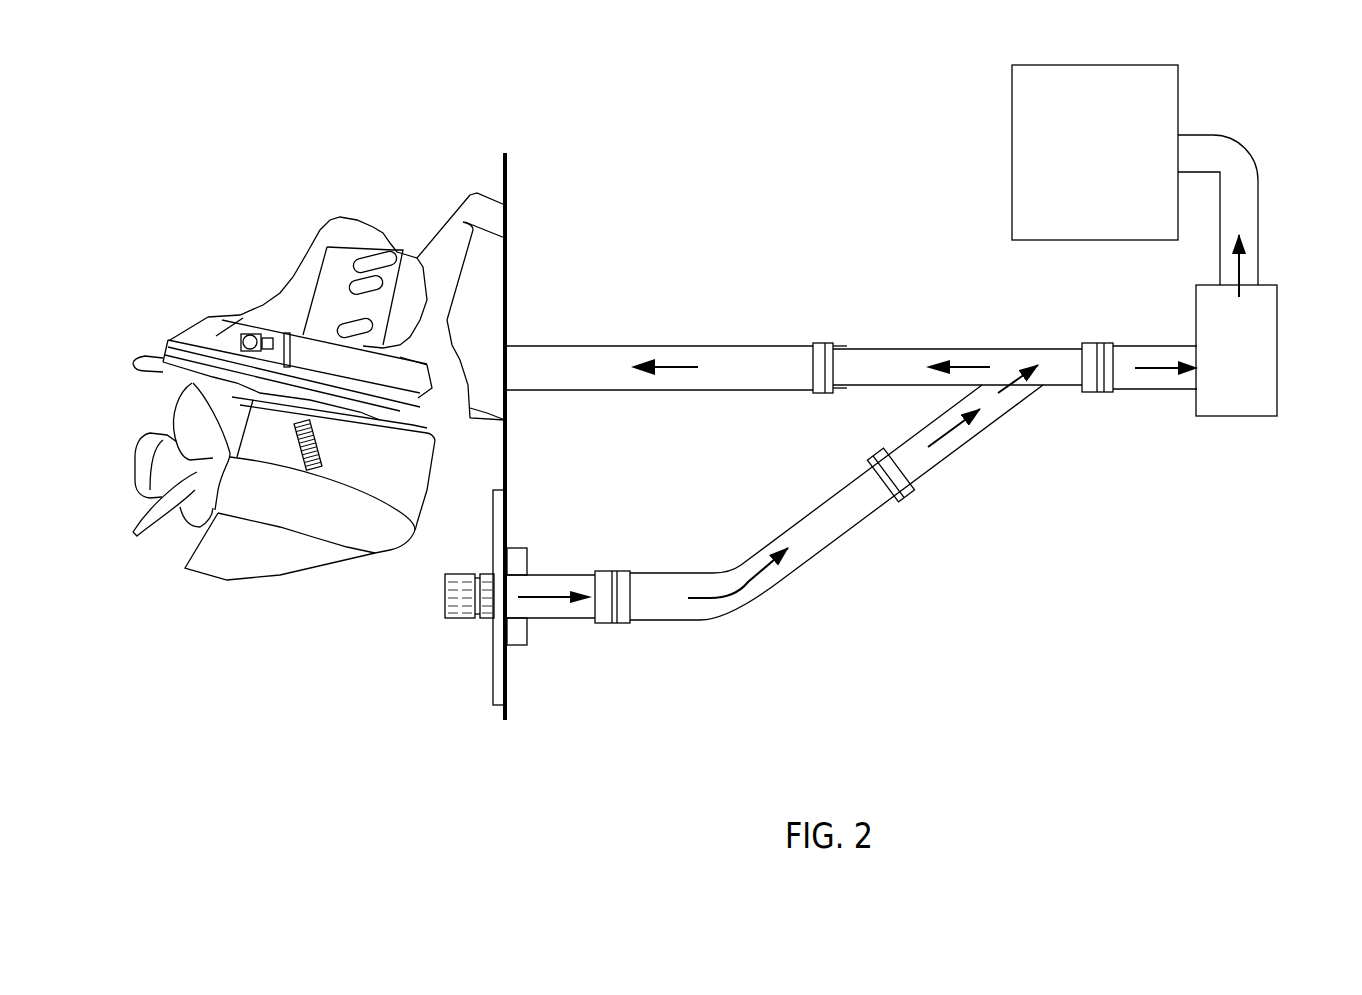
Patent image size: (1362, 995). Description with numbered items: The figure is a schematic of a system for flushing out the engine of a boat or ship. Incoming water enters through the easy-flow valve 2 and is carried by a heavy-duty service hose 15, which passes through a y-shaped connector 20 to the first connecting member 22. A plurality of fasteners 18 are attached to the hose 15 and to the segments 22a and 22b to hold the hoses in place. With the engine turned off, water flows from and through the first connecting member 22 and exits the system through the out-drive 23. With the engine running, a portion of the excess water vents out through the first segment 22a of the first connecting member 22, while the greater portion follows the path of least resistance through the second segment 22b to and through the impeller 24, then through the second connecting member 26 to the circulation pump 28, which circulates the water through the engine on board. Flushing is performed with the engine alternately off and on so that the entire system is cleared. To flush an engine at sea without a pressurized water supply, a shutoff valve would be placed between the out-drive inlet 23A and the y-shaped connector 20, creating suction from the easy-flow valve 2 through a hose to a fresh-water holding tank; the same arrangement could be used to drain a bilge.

The easy-flow valve 2 is at (427, 436).
The heavy-duty service hose 15 is at (774, 502).
The fasteners 18 is at (854, 492).
The y-shaped connector 20 is at (1016, 440).
The first connecting member 22 is at (851, 321).
The first segment 22a is at (659, 335).
The second segment 22b is at (1143, 330).
The out-drive 23 is at (312, 388).
The out-drive inlet 23A is at (221, 524).
The impeller 24 is at (1247, 362).
The second connecting member 26 is at (1266, 216).
The circulation pump 28 is at (1094, 172).